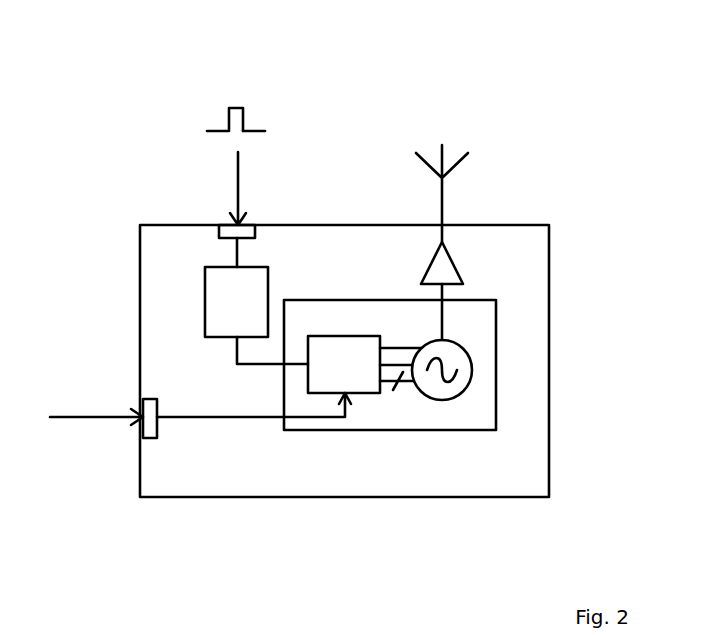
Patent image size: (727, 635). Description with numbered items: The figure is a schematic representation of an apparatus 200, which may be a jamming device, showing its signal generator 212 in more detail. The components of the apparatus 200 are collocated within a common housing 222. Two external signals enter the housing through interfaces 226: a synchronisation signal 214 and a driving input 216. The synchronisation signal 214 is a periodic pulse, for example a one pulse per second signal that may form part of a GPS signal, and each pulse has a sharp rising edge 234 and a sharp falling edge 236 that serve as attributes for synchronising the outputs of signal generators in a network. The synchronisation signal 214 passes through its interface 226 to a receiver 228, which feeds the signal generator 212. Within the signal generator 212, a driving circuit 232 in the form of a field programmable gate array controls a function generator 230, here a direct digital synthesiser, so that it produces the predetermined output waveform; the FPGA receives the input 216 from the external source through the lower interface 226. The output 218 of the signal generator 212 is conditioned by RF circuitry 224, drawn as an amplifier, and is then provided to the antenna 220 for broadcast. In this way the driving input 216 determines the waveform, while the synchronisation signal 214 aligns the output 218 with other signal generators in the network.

The apparatus 200 is at (485, 112).
The signal generator 212 is at (495, 337).
The synchronisation signal input 214 is at (212, 66).
The input 216 is at (100, 417).
The output 218 is at (442, 318).
The antenna 220 is at (445, 200).
The common housing 222 is at (549, 240).
The RF circuitry 224 is at (430, 260).
The interfaces 226 is at (228, 222).
The receivers 228 is at (205, 290).
The function generator 230 is at (455, 397).
The driving circuit 232 is at (335, 336).
The rising edge 234 is at (233, 115).
The falling edge 236 is at (244, 122).